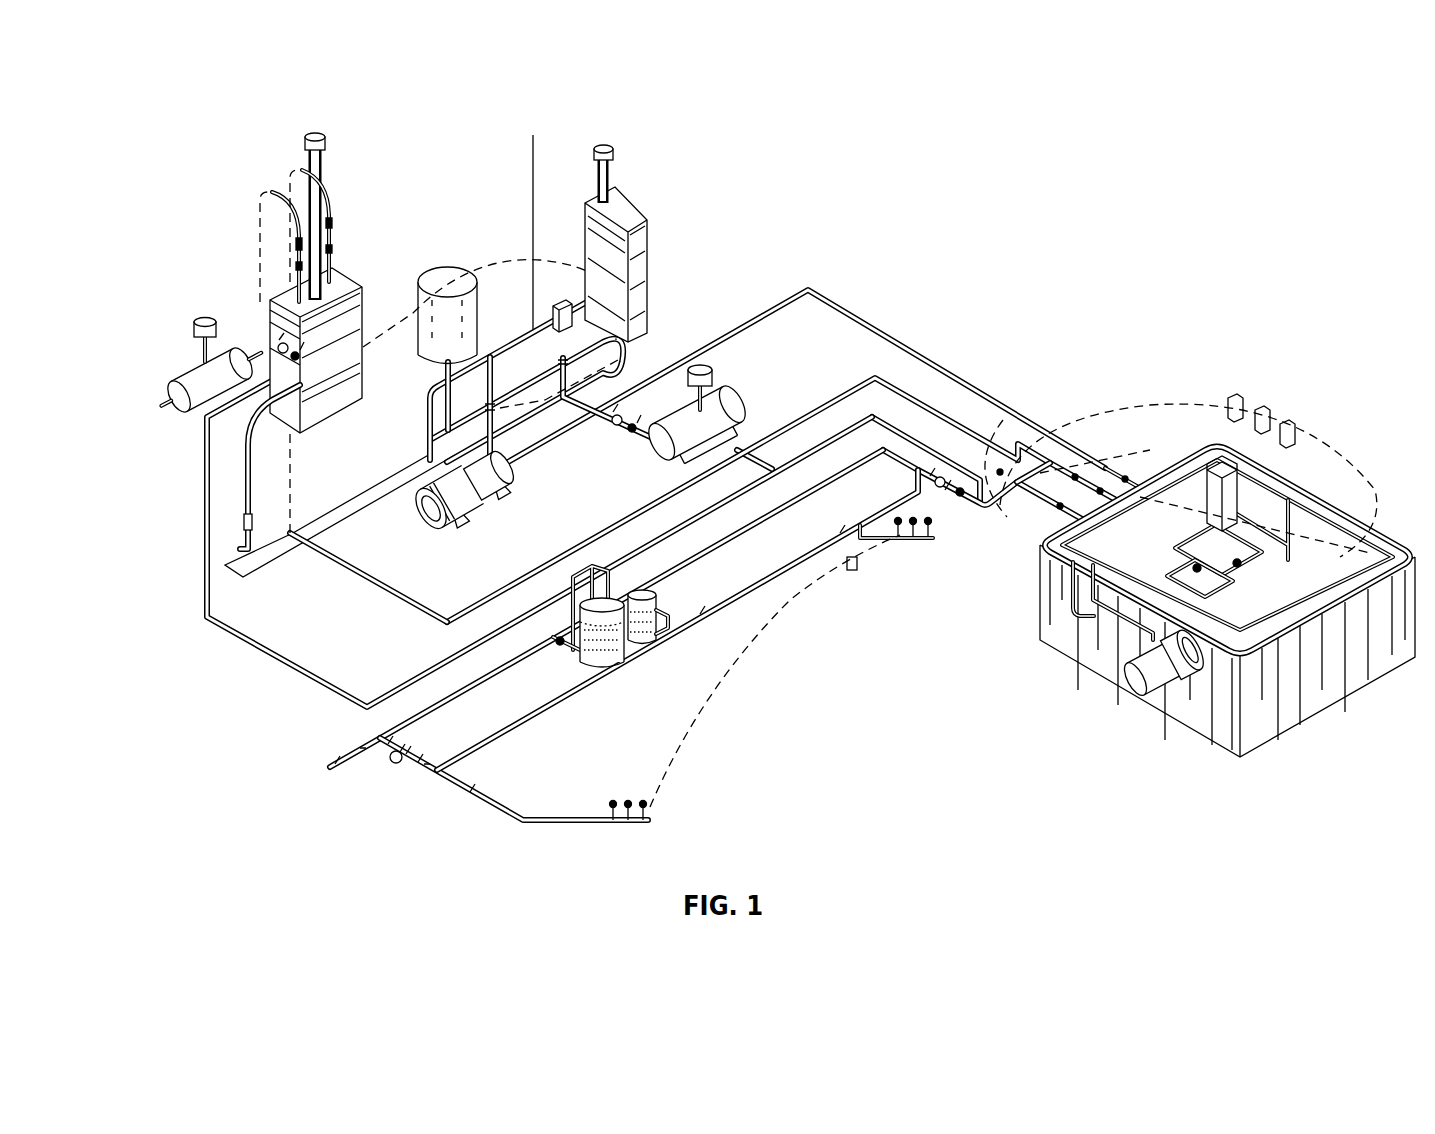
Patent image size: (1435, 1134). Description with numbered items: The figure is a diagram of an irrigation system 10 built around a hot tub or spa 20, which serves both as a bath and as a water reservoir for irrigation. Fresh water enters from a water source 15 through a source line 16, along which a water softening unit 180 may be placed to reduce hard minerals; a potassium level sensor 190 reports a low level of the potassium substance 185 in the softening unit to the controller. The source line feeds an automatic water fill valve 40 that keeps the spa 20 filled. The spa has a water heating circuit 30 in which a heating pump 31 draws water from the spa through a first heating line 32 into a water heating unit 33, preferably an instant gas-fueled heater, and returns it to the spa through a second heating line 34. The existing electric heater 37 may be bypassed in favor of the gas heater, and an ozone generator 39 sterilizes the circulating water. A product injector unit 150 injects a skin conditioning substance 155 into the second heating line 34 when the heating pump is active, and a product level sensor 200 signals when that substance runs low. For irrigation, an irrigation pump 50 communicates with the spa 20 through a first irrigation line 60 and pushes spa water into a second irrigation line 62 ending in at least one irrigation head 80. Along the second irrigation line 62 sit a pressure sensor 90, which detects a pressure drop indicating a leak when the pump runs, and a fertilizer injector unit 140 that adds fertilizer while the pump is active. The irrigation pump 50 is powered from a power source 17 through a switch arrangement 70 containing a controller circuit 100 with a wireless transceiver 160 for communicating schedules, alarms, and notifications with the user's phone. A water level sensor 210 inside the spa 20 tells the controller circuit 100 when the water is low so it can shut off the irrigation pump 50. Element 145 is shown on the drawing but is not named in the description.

The irrigation system 10 is at (1126, 174).
The water source 15 is at (355, 777).
The source line 16 is at (500, 662).
The power source 17 is at (556, 318).
The spa 20 is at (1345, 680).
The water heating circuit 30 is at (331, 289).
The heating pump 31 is at (1148, 680).
The first heating line 32 is at (375, 592).
The water heating unit 33 is at (320, 407).
The second heating line 34 is at (290, 657).
The electric heater 37 is at (1115, 640).
The ozone generator 39 is at (1045, 640).
The automatic water fill valve 40 is at (957, 512).
The irrigation pump 50 is at (487, 505).
The first irrigation line 60 is at (918, 355).
The second irrigation line 62 is at (600, 430).
The switch arrangement 70 is at (627, 213).
The irrigation head 80 is at (645, 804).
The pressure sensor 90 is at (438, 410).
The controller circuit 100 is at (662, 260).
The fertilizer injector unit 140 is at (720, 428).
The pressure gauge 145 is at (702, 410).
The product injector unit 150 is at (175, 382).
The skin conditioning substance 155 is at (200, 362).
The wireless transceiver 160 is at (628, 170).
The water softening unit 180 is at (615, 660).
The potassium substance 185 is at (648, 592).
The potassium level sensor 190 is at (662, 628).
The product level sensor 200 is at (258, 357).
The water level sensor 210 is at (1335, 516).